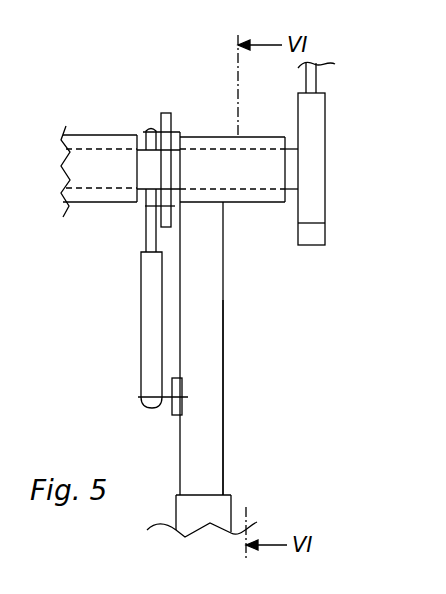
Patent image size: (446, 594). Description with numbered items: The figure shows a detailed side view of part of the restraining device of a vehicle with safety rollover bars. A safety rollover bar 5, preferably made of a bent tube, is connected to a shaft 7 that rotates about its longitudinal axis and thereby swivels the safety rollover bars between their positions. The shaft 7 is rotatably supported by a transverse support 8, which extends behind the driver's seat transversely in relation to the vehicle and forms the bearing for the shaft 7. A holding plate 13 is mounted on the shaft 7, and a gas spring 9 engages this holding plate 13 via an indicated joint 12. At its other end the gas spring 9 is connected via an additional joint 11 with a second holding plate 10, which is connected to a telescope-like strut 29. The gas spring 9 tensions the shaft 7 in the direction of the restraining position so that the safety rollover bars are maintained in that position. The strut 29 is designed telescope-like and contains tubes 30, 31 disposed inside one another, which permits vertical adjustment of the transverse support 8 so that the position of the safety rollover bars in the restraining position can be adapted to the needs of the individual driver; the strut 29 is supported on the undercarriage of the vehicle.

The safety rollover bar 5 is at (317, 83).
The shaft 7 is at (252, 172).
The transverse support 8 is at (90, 130).
The gas spring 9 is at (141, 290).
The holding plate 10 is at (172, 415).
The joint 11 is at (138, 397).
The joint 12 is at (145, 206).
The holding plate 13 is at (172, 120).
The strut 29 is at (224, 415).
The tube 30 is at (224, 322).
The tube 31 is at (233, 507).